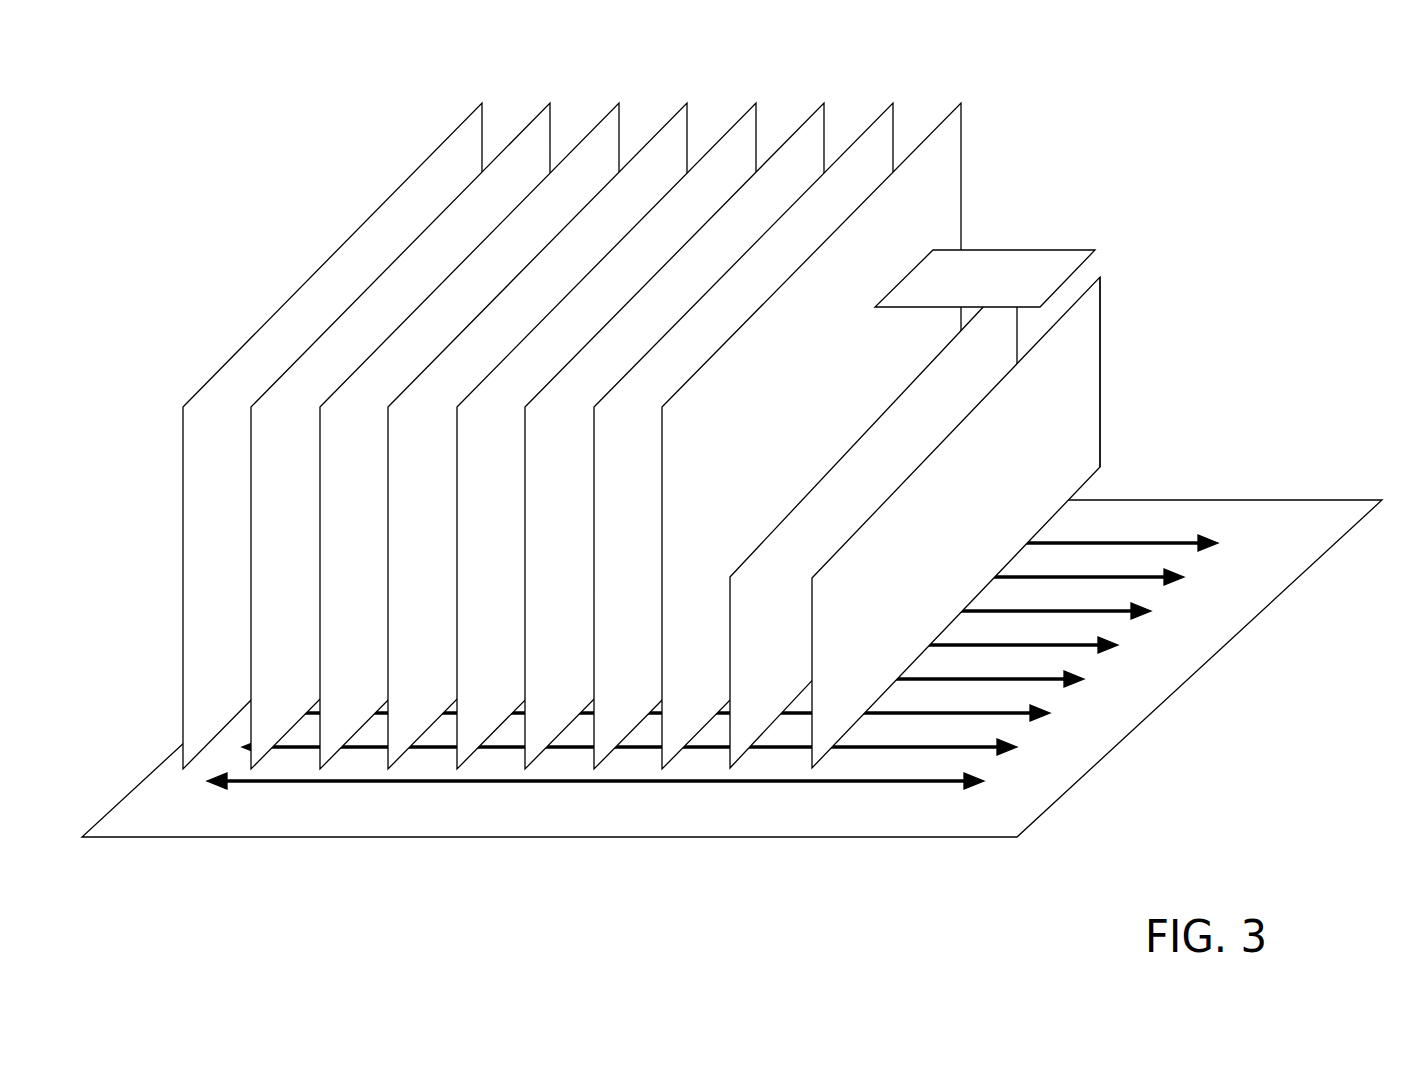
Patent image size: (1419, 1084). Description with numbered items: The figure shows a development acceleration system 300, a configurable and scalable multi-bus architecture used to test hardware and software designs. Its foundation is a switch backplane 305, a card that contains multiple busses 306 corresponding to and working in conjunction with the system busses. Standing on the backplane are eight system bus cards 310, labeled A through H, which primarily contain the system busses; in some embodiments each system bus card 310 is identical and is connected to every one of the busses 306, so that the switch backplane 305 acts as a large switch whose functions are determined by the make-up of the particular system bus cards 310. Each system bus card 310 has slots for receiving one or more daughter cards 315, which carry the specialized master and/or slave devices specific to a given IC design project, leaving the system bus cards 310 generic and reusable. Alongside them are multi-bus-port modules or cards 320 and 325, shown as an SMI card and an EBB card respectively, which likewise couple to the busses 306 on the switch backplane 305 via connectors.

The development acceleration system 300 is at (208, 163).
The switch backplane 305 is at (1325, 498).
The busses 306 is at (1050, 543).
The system bus cards 310 is at (438, 148).
The daughter cards 315 is at (978, 250).
The multi-bus-port module or card 320 is at (812, 578).
The multi-bus-port module or card 325 is at (1100, 377).